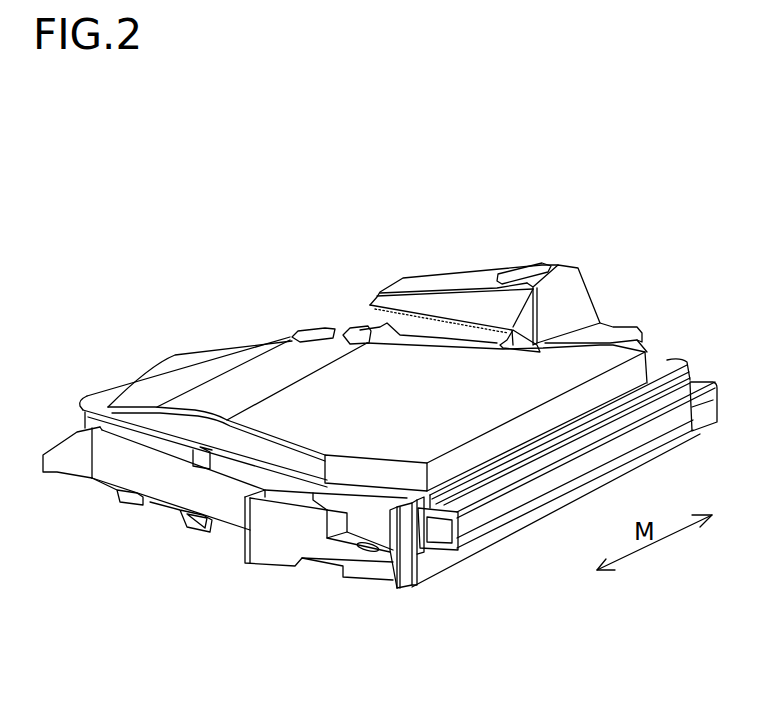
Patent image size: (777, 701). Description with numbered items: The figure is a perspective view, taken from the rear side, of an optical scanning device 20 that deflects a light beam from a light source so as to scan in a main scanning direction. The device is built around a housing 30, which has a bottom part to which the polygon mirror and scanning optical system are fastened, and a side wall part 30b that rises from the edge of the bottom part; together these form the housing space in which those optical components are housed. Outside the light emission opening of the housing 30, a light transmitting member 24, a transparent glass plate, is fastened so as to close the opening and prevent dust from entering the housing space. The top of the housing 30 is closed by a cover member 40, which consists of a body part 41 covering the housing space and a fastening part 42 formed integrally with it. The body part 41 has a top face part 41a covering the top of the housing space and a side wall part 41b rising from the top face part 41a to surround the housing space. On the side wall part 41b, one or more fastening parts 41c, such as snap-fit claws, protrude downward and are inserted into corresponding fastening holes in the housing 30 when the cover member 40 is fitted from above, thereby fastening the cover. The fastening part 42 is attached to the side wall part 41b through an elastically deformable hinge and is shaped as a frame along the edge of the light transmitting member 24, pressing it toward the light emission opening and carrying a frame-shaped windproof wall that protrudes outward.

The optical scanning device 20 is at (614, 198).
The light transmitting member 24 is at (417, 550).
The housing 30 is at (280, 560).
The side wall part 30b is at (403, 560).
The cover member 40 is at (301, 352).
The body part 41 is at (210, 292).
The top face part 41a is at (225, 377).
The side wall part 41b is at (102, 422).
The fastening part 41c is at (187, 532).
The fastening part 42 is at (497, 512).